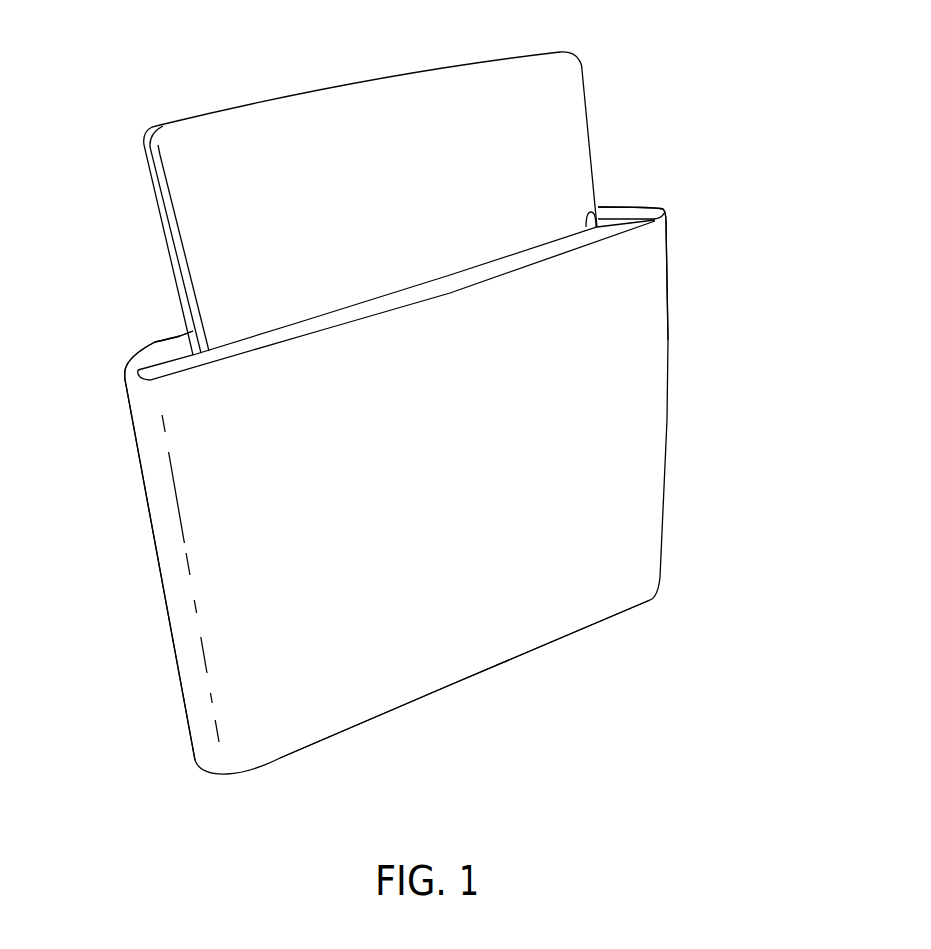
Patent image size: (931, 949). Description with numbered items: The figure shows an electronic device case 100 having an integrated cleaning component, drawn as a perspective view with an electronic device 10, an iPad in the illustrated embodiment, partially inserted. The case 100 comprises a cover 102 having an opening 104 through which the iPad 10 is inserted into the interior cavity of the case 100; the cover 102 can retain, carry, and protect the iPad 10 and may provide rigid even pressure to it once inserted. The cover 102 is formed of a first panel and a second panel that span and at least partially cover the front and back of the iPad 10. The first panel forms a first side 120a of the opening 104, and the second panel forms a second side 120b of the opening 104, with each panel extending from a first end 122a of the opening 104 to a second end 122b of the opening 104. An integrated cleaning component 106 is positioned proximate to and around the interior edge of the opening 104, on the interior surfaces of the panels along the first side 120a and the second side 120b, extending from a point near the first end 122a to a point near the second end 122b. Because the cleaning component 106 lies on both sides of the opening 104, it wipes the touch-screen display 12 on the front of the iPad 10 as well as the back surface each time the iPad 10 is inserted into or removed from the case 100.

The electronic device 10 is at (393, 177).
The touch-screen display 12 is at (557, 133).
The electronic device case 100 is at (713, 363).
The cover 102 is at (645, 483).
The opening 104 is at (607, 205).
The integrated cleaning component 106 is at (625, 222).
The first side of the opening 120a is at (424, 318).
The second side of the opening 120b is at (177, 326).
The first end of the opening 122a is at (108, 390).
The second end of the opening 122b is at (680, 218).